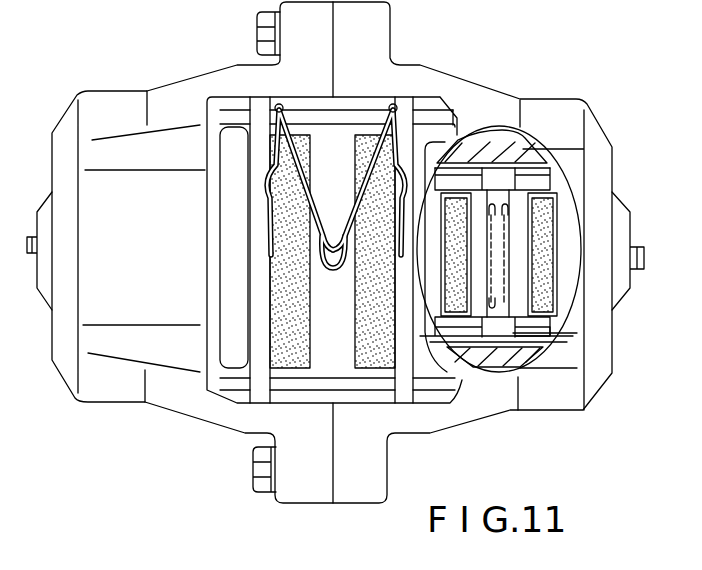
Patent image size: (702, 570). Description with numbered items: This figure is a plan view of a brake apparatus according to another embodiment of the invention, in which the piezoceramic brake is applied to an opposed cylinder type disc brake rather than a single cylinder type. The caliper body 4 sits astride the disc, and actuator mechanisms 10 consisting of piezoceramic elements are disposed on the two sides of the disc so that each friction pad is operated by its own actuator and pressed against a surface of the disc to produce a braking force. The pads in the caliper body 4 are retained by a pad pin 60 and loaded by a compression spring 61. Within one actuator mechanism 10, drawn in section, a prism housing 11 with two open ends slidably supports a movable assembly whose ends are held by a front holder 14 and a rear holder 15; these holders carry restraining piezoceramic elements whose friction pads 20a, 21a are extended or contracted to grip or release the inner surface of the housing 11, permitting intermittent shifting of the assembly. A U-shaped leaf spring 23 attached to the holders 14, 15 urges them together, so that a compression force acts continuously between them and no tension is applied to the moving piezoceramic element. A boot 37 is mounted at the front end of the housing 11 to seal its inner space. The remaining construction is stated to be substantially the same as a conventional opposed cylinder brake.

The caliper body 4 is at (117, 107).
The actuator mechanism 10 is at (409, 218).
The prism housing 11 is at (530, 155).
The front holder 14 is at (465, 327).
The rear holder 15 is at (548, 327).
The friction pad 20a is at (455, 297).
The friction pad 21a is at (553, 307).
The U-shaped leaf spring 23 is at (497, 317).
The boot 37 is at (213, 347).
The pad pin 60 is at (360, 118).
The compression spring 61 is at (398, 118).